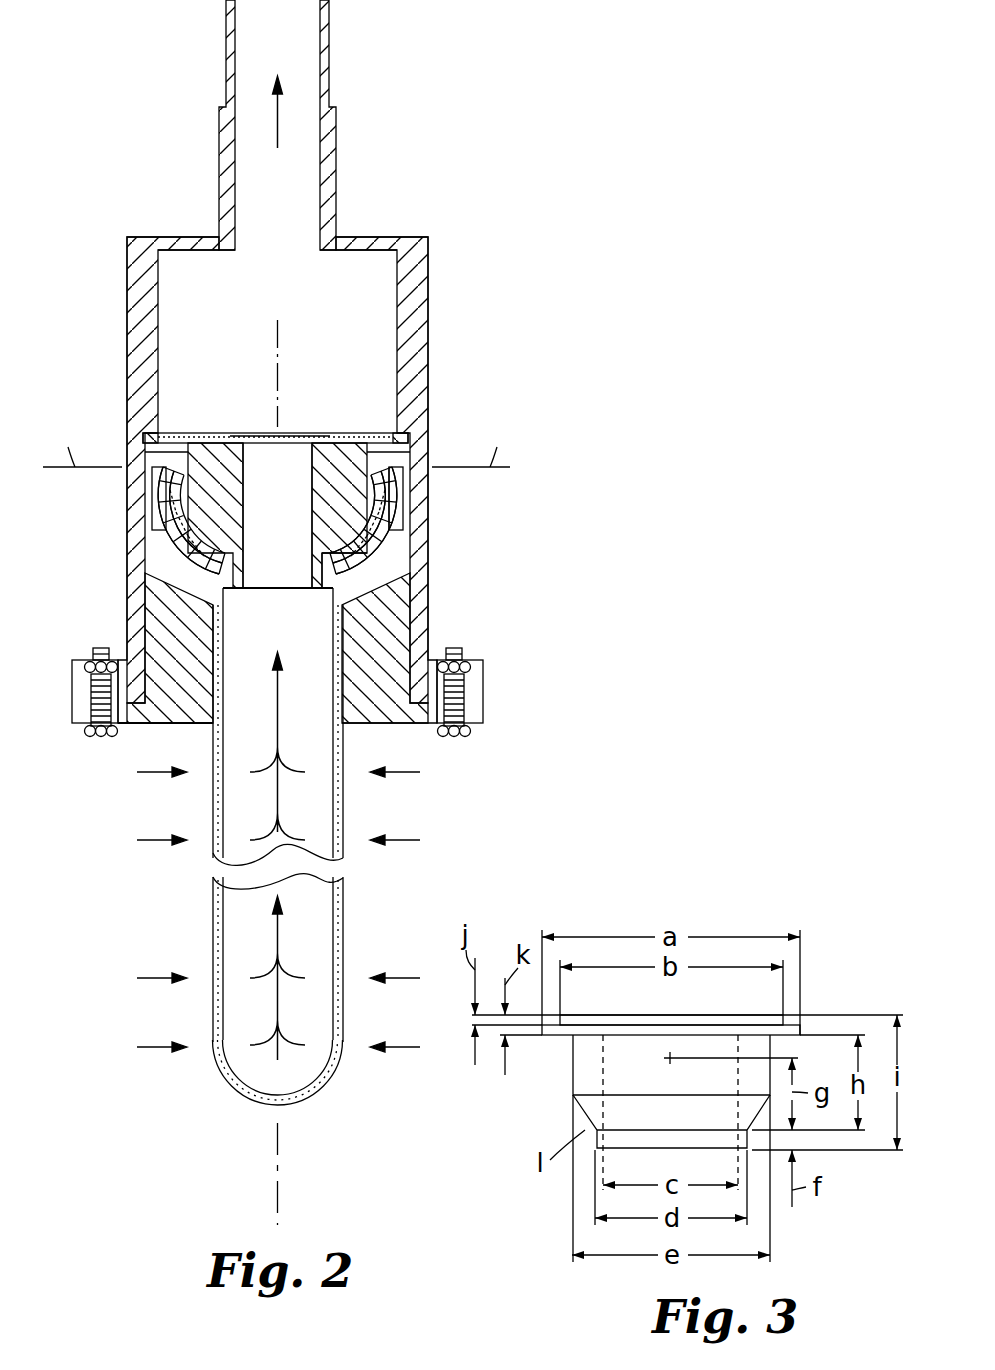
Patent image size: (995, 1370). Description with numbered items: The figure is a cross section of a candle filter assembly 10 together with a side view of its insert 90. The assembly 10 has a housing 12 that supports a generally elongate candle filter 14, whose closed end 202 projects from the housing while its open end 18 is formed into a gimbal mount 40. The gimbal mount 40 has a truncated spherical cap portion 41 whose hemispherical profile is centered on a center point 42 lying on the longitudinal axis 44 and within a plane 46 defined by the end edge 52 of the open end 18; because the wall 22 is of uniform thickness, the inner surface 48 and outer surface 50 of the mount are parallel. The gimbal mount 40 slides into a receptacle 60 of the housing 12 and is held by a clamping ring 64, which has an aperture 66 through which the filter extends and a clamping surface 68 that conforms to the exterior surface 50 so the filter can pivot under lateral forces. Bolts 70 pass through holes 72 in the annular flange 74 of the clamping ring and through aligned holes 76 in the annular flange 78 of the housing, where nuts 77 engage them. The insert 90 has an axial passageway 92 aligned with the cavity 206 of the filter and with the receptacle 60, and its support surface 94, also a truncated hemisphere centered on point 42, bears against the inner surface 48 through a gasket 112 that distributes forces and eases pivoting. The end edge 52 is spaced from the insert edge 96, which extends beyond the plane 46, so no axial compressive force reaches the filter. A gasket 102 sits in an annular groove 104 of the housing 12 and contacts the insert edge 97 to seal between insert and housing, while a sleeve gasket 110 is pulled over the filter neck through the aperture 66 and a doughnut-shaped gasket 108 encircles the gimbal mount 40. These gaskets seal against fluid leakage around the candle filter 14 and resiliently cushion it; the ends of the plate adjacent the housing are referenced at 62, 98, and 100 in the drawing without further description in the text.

In FIG. 2, the candle filter assembly 10 is at (430, 112).
In FIG. 2, the housing 12 is at (432, 328).
In FIG. 2, the candle filter 14 is at (355, 925).
In FIG. 2, the open end 18 is at (165, 485).
In FIG. 2, the wall 22 is at (345, 1012).
In FIG. 2, the gimbal mount 40 is at (135, 512).
In FIG. 2, the truncated spherical cap portion 41 is at (162, 572).
In FIG. 2, the center point 42 is at (289, 445).
In FIG. 2, the longitudinal axis 44 is at (279, 350).
In FIG. 2, the plane 46 is at (281, 443).
In FIG. 2, the inner surface 48 is at (220, 535).
In FIG. 2, the outer surface 50 is at (165, 520).
In FIG. 2, the end edge 52 is at (393, 467).
In FIG. 2, the receptacle 60 is at (158, 312).
In FIG. 2, the plate end 62 is at (170, 440).
In FIG. 2, the clamping ring 64 is at (378, 722).
In FIG. 2, the aperture 66 is at (208, 725).
In FIG. 2, the clamping surface 68 is at (343, 556).
In FIG. 2, the bolts 70 is at (92, 735).
In FIG. 2, the holes 72 is at (95, 697).
In FIG. 2, the annular flange 74 is at (132, 725).
In FIG. 2, the holes 76 is at (80, 680).
In FIG. 2, the nuts 77 is at (100, 650).
In FIG. 2, the annular flange 78 is at (85, 660).
In FIG. 2, the insert 90 is at (420, 503).
In FIG. 3, the insert 90 is at (702, 1036).
In FIG. 3, the passageway 92 is at (612, 1040).
In FIG. 3, the support surface 94 is at (587, 1110).
In FIG. 3, the edge 96 is at (550, 1036).
In FIG. 3, the edge 97 is at (790, 1015).
In FIG. 2, the plate 98 is at (213, 440).
In FIG. 2, the insert body 100 is at (302, 445).
In FIG. 2, the gasket 102 is at (260, 432).
In FIG. 2, the annular groove 104 is at (395, 435).
In FIG. 2, the gasket 108 is at (415, 543).
In FIG. 2, the sleeve gasket 110 is at (413, 585).
In FIG. 2, the gasket 112 is at (407, 557).
In FIG. 2, the closed end 202 is at (310, 1096).
In FIG. 2, the cavity 206 is at (229, 723).